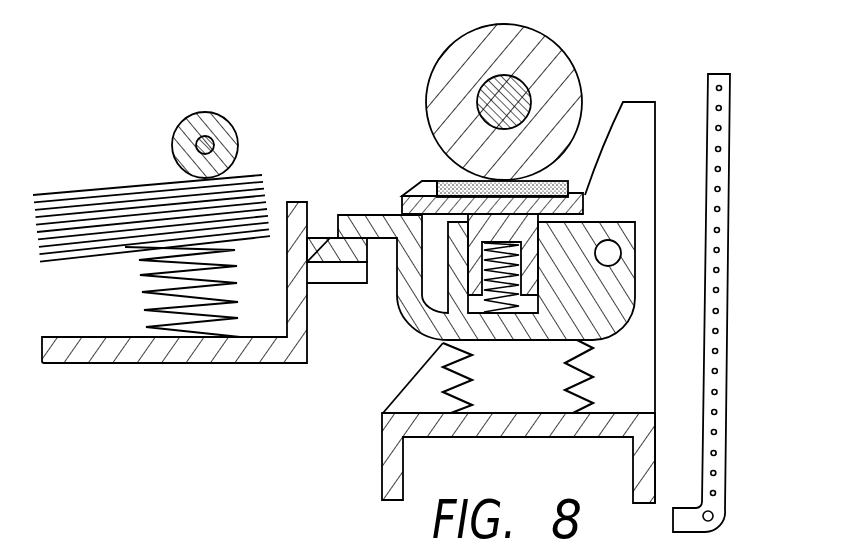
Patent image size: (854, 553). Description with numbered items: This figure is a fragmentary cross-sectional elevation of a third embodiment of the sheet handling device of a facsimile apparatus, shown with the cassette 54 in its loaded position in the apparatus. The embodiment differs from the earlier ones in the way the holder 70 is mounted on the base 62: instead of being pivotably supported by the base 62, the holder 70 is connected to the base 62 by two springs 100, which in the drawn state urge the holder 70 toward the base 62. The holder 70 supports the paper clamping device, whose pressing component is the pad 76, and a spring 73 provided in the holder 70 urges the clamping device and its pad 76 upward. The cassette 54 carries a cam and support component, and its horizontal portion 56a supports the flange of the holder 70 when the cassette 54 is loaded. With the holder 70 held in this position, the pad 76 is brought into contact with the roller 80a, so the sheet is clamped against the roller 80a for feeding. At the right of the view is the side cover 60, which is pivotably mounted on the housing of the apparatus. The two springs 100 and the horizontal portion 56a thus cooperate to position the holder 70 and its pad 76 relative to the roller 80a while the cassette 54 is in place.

The cassette 54 is at (205, 363).
The horizontal portion of the cam and support component 56a is at (328, 237).
The side cover 60 is at (715, 111).
The base 62 is at (545, 481).
The holder 70 is at (403, 318).
The spring 73 is at (465, 322).
The pad 76 is at (450, 178).
The roller 80a is at (557, 50).
The springs 100 is at (573, 413).